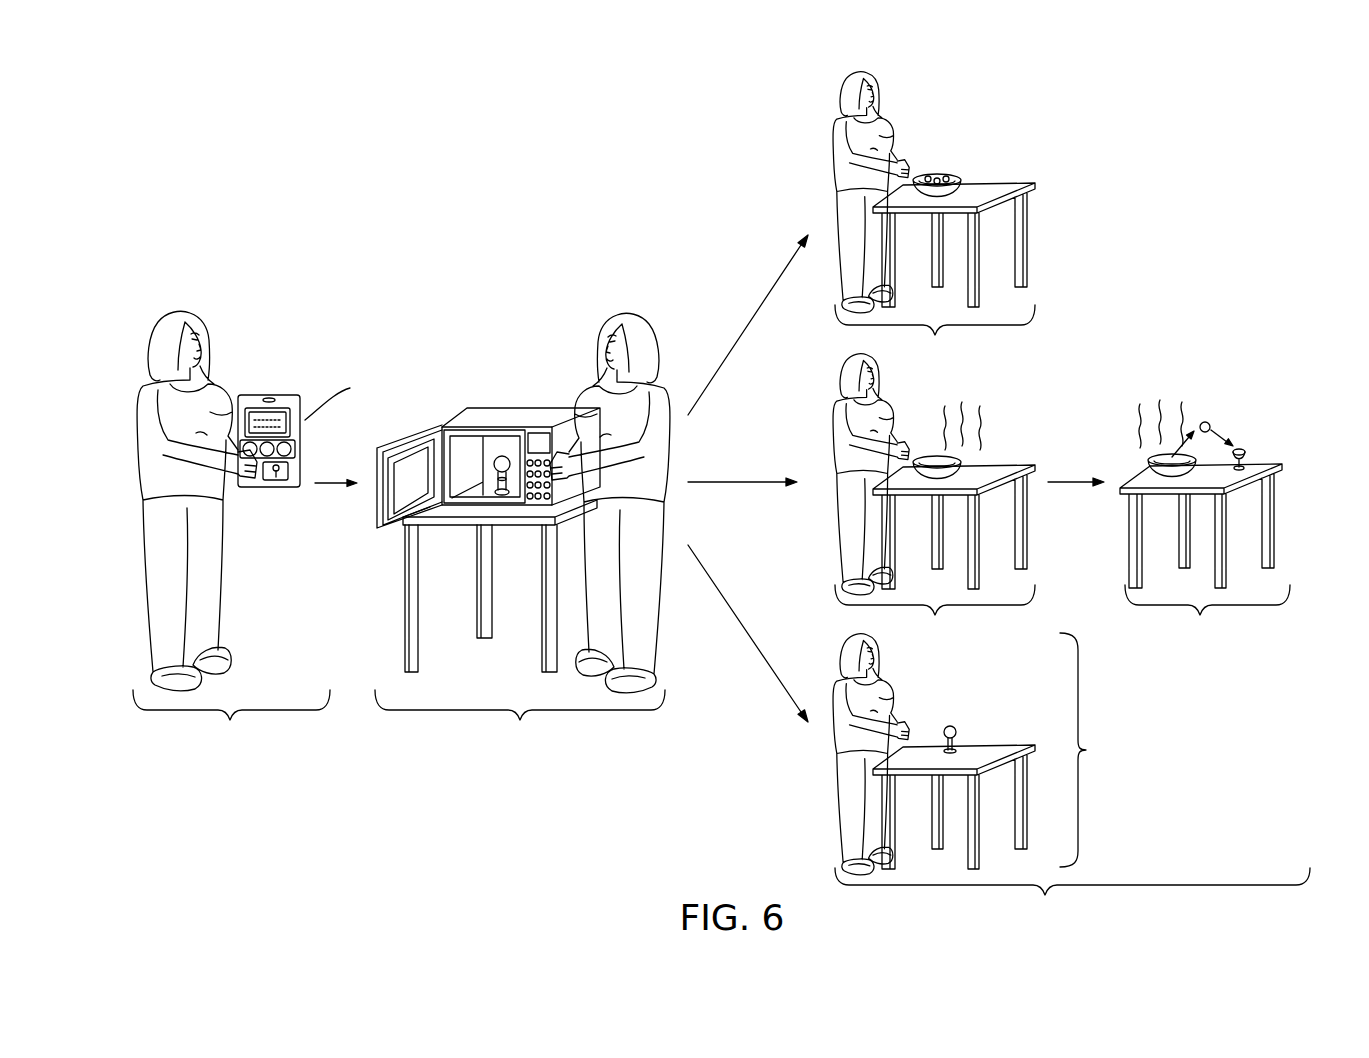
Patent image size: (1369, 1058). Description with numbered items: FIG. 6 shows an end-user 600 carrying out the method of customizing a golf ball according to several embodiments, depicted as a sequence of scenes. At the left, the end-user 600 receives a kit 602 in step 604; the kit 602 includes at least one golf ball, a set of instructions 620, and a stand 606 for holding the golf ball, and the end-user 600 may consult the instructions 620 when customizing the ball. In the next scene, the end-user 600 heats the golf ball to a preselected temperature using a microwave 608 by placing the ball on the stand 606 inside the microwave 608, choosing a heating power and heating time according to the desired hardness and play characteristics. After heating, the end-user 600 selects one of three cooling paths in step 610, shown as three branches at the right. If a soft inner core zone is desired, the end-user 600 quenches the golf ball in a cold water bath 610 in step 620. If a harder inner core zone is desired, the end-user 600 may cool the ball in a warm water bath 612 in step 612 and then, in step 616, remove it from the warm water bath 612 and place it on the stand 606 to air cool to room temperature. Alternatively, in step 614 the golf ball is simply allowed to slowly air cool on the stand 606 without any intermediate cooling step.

The end-user 600 is at (204, 296).
The kit 602 is at (292, 378).
The step of receiving kit 604 is at (916, 98).
The stand 606 is at (266, 494).
The microwave 608 is at (525, 408).
The cold water bath 610 is at (978, 197).
The warm water bath 612 is at (967, 470).
The slow air cooling step 614 is at (1095, 750).
The air cooling on stand step 616 is at (1205, 554).
The instructions 620 is at (584, 512).